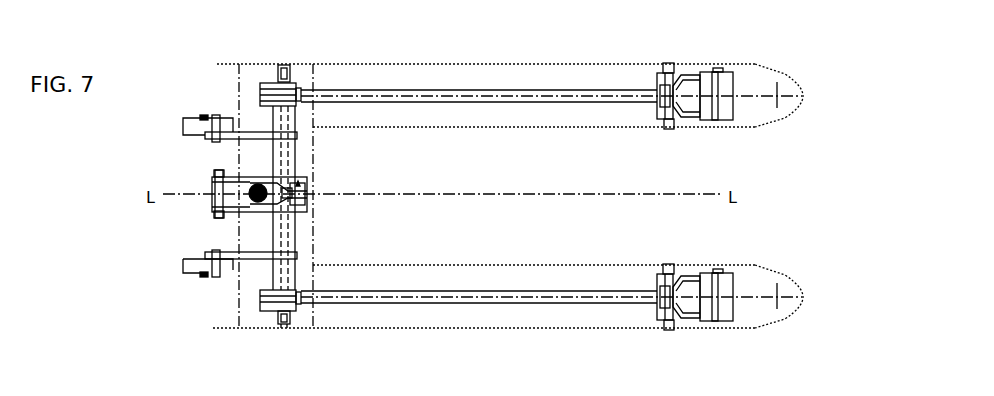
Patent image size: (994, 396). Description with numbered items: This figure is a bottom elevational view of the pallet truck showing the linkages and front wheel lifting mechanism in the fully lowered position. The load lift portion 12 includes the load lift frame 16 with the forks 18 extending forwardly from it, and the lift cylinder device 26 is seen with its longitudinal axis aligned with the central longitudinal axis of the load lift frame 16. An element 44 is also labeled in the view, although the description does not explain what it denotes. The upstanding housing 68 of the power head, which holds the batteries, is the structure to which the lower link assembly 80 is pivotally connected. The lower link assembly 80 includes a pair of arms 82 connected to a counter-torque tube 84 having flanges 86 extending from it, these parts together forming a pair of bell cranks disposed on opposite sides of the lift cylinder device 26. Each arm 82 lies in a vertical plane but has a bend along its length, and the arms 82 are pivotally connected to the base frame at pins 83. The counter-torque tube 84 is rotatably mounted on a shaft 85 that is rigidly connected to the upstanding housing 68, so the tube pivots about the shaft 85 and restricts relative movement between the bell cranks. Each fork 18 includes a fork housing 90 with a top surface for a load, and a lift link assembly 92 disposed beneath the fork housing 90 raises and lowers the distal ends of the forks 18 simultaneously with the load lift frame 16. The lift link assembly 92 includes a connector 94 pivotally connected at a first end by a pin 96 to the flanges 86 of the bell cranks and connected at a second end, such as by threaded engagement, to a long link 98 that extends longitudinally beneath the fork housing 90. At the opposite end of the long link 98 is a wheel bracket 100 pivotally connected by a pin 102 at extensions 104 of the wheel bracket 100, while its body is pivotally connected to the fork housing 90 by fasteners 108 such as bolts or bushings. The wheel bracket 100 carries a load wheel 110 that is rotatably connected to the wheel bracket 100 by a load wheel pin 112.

The load lift portion 12 is at (325, 345).
The load lift frame 16 is at (239, 62).
The forks 18 is at (787, 313).
The lift cylinder device 26 is at (254, 210).
The pivot bracket 44 is at (232, 178).
The upstanding housing 68 is at (316, 253).
The lower link assembly 80 is at (262, 263).
The arms 82 is at (249, 256).
The pins 83 is at (208, 272).
The counter-torque tube 84 is at (292, 160).
The shaft 85 is at (284, 63).
The flanges 86 is at (268, 307).
The fork housing 90 is at (562, 330).
The lift link assembly 92 is at (425, 307).
The connector 94 is at (295, 306).
The pin 96 is at (271, 303).
The long link 98 is at (508, 298).
The wheel bracket 100 is at (697, 323).
The pin 102 is at (658, 318).
The extensions 104 is at (657, 312).
The fasteners 108 is at (668, 322).
The load wheel 110 is at (725, 288).
The load wheel pin 112 is at (713, 285).